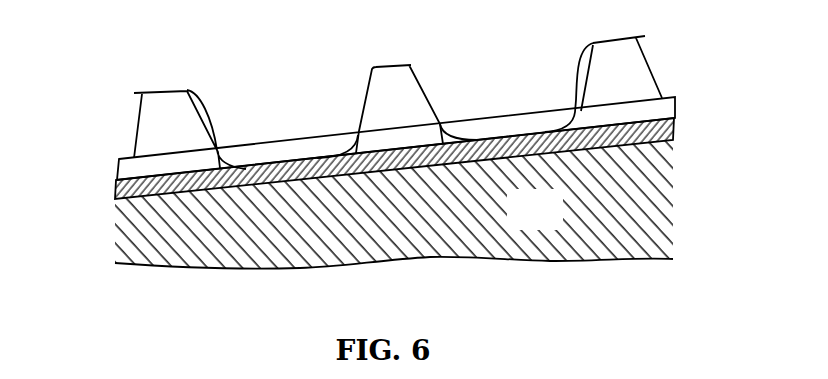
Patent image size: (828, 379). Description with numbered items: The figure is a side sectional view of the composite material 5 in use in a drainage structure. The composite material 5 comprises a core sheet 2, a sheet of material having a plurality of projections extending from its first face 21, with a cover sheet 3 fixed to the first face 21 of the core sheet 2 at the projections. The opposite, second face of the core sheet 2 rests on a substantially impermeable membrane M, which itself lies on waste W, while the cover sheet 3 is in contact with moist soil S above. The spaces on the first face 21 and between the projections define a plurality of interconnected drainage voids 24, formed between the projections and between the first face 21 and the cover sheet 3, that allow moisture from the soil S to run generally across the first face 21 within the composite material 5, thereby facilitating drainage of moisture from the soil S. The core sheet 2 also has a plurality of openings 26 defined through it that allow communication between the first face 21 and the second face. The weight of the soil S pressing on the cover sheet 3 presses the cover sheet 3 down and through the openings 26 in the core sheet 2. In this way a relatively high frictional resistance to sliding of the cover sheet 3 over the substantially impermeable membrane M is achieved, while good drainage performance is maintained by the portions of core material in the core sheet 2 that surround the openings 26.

The core sheet 2 is at (677, 110).
The cover sheet 3 is at (362, 100).
The composite material 5 is at (697, 37).
The first face 21 is at (143, 128).
The interconnected drainage voids 24 is at (440, 124).
The openings 26 is at (347, 144).
The substantially impermeable membrane M is at (115, 192).
The soil S is at (492, 43).
The waste W is at (543, 221).